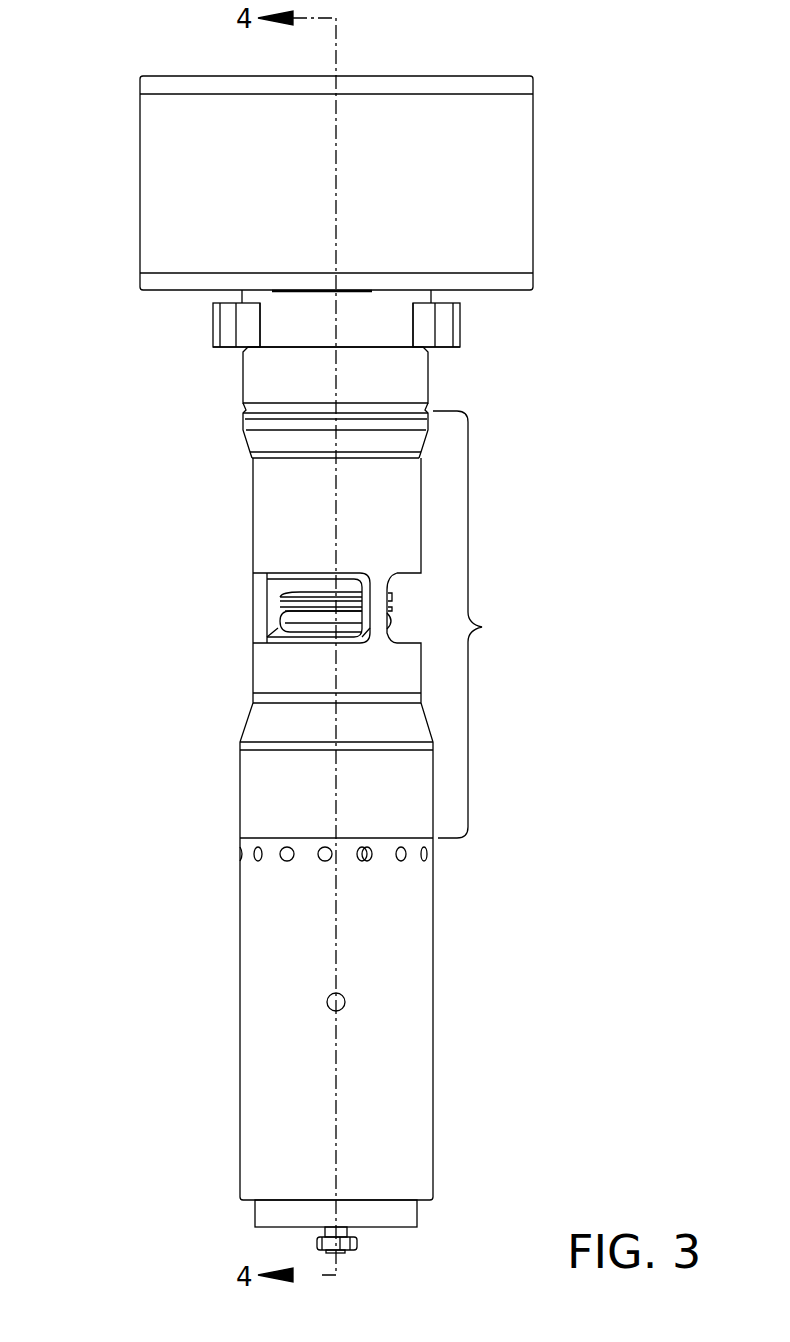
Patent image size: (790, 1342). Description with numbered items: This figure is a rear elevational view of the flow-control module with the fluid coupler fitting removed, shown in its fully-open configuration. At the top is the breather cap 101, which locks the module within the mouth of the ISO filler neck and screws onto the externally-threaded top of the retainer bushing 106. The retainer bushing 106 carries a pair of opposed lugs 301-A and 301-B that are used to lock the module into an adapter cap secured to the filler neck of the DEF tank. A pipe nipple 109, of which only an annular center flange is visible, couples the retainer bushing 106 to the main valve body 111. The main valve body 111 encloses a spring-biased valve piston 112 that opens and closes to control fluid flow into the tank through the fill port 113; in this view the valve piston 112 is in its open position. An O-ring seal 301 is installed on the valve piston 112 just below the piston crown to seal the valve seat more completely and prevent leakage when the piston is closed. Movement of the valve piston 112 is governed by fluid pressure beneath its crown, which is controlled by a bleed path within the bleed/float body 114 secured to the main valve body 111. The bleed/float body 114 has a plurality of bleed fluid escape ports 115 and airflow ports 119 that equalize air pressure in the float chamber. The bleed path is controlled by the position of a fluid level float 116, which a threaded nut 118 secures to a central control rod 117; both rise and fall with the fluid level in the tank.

The breather cap 101 is at (183, 180).
The retainer bushing 106 is at (373, 319).
The lug 301-A is at (228, 324).
The lug 301-B is at (442, 323).
The pipe nipple 109 is at (263, 377).
The main valve body 111 is at (482, 627).
The fill port 113 is at (387, 575).
The valve piston 112 is at (288, 603).
The O-ring seal 301 is at (291, 614).
The bleed/float body 114 is at (278, 1070).
The bleed fluid escape ports 115 is at (318, 861).
The airflow ports 119 is at (326, 998).
The fluid level float 116 is at (397, 1212).
The central control rod 117 is at (347, 1232).
The threaded nut 118 is at (350, 1246).